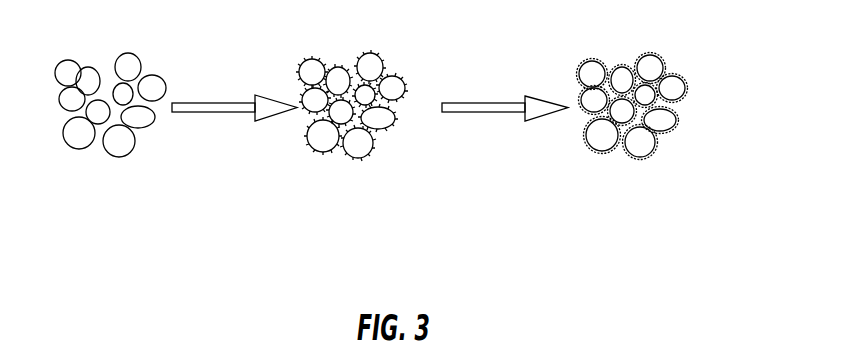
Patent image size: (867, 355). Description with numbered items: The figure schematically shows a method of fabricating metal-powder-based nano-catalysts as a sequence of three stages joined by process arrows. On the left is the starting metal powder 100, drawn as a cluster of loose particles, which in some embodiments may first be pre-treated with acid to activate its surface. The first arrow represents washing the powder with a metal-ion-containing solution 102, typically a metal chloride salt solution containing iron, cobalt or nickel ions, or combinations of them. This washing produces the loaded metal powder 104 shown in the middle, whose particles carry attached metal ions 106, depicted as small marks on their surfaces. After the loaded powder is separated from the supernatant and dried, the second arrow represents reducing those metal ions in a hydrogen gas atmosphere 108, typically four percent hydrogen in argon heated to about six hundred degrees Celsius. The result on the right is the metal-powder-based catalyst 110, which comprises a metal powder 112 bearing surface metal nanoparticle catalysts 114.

The metal powder 100 is at (112, 168).
The metal-ion-containing solution 102 is at (218, 123).
The loaded metal powder 104 is at (342, 163).
The metal ions 106 is at (368, 52).
The hydrogen gas atmosphere 108 is at (490, 122).
The metal-powder-based catalyst 110 is at (632, 167).
The metal powder 112 is at (648, 68).
The surface metal nanoparticle catalysts 114 is at (650, 152).